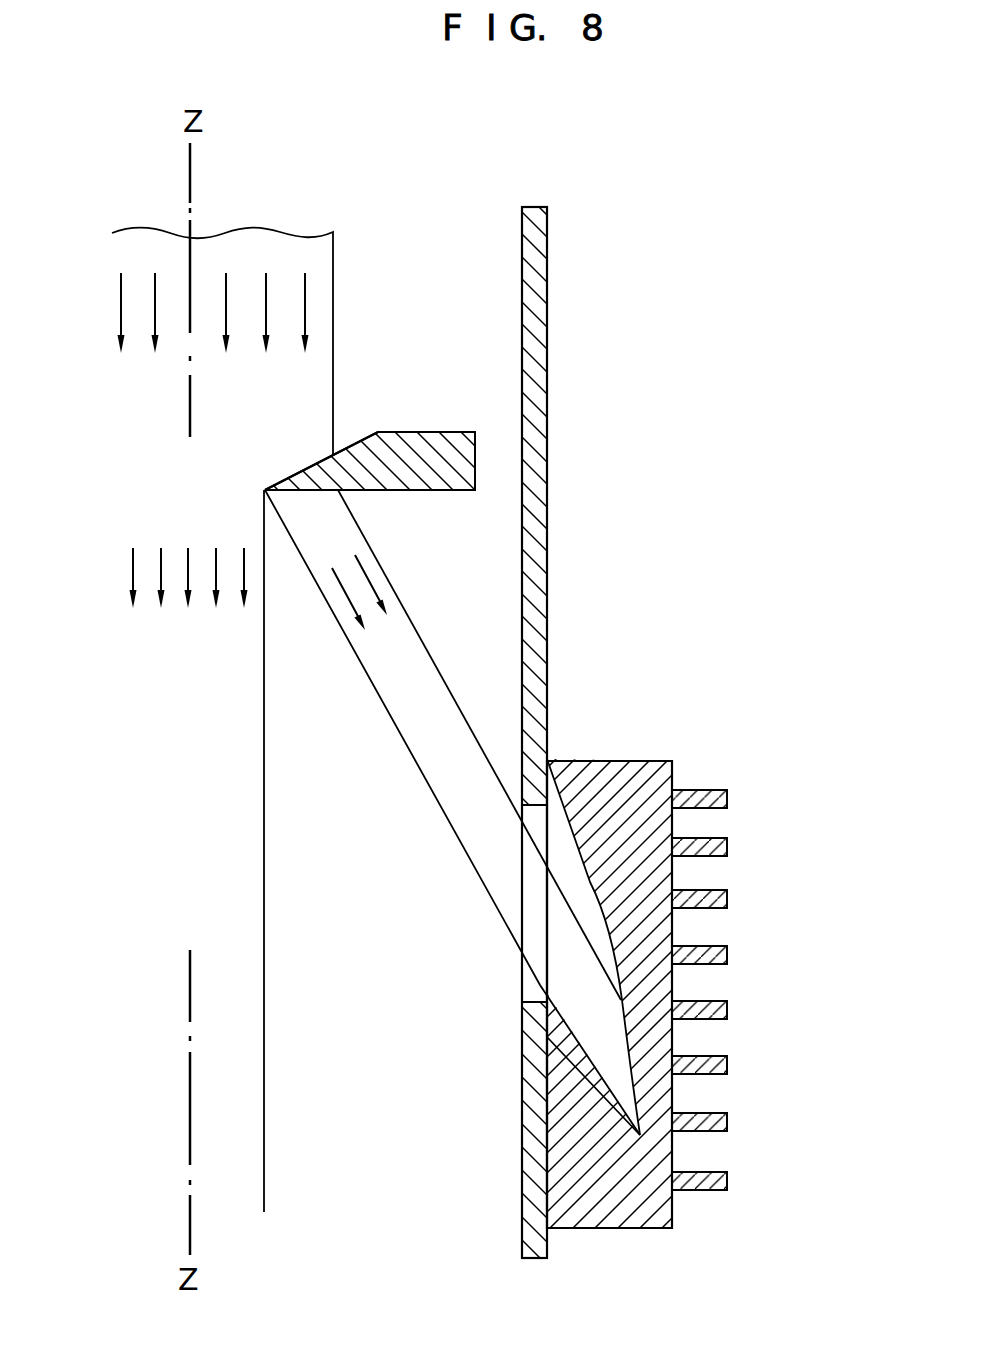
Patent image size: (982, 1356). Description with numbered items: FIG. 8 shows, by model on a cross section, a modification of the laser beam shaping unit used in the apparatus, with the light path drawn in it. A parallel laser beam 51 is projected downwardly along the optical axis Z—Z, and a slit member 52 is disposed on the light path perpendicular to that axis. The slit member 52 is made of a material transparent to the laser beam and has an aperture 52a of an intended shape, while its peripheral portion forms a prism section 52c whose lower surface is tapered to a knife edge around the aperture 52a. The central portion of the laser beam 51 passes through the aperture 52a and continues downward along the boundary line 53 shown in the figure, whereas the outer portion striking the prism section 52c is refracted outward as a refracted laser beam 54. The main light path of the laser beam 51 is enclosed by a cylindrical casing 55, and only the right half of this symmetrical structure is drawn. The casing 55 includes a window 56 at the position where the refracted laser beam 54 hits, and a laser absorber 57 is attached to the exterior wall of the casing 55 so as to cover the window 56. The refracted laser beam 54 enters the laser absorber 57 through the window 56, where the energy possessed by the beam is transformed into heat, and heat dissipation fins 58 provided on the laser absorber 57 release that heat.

The laser beam 51 is at (333, 253).
The slit member 52 is at (403, 422).
The aperture 52a is at (216, 495).
The prism section 52c is at (313, 492).
The optical axis boundary line 53 is at (264, 1195).
The refracted laser beam 54 is at (437, 657).
The casing 55 is at (548, 390).
The window 56 is at (532, 808).
The laser absorber 57 is at (610, 1197).
The heat dissipation fins 58 is at (727, 845).